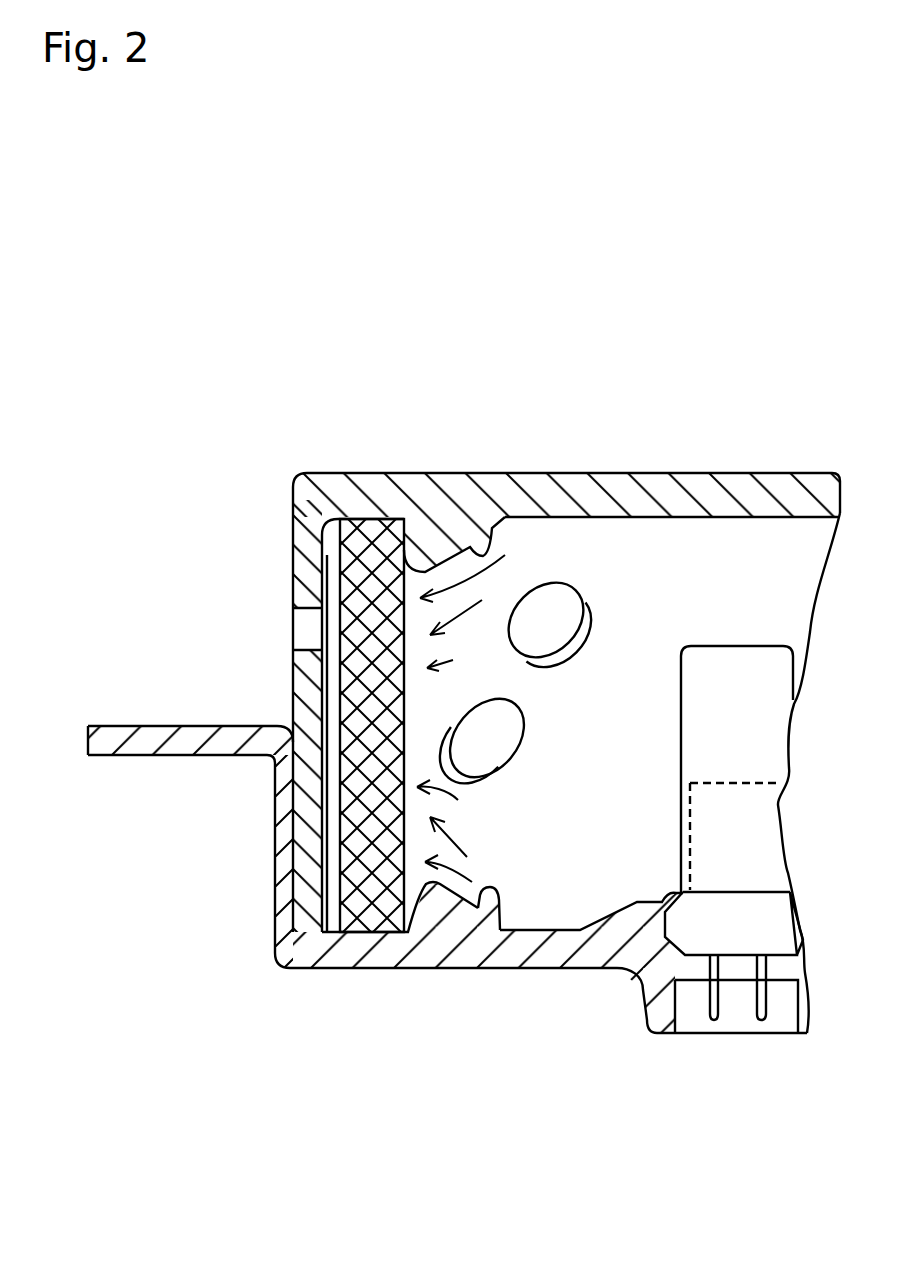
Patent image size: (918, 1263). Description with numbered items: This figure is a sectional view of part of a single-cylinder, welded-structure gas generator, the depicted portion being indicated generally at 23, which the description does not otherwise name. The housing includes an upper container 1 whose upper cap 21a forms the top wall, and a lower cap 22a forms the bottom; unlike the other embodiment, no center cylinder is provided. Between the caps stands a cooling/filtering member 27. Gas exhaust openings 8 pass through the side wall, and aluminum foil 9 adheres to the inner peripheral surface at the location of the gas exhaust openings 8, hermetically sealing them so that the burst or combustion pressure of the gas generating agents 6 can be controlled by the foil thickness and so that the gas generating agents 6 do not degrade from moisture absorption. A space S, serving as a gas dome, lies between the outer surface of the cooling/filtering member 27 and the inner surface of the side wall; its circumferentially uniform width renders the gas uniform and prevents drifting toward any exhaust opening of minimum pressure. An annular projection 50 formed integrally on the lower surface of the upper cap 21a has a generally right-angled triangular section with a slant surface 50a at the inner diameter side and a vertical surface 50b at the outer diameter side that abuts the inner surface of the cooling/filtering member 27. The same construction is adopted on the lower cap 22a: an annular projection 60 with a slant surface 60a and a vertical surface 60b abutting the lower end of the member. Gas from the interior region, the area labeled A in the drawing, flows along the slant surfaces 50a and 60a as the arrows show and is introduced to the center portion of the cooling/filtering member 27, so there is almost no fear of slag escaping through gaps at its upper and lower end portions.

The upper container 1 is at (735, 470).
The upper cap 21a is at (670, 493).
The lower cap 22a is at (603, 937).
The air intake structure 23 is at (170, 453).
The gas generating agents 6 is at (550, 607).
The gas exhaust openings 8 is at (290, 622).
The aluminum foil 9 is at (320, 565).
The cooling/filtering member 27 is at (370, 553).
The annular projection 50 is at (425, 547).
The slant surface 50a is at (475, 530).
The vertical surface 50b is at (388, 540).
The annular projection 60 is at (437, 905).
The slant surface 60a is at (490, 907).
The vertical surface 60b is at (388, 937).
The space S is at (333, 745).
The chamber A is at (610, 726).